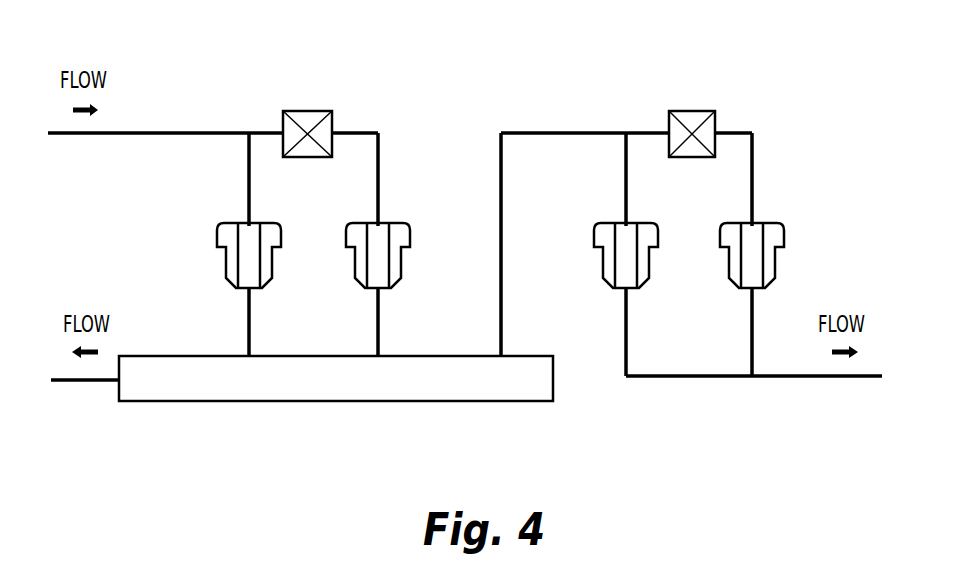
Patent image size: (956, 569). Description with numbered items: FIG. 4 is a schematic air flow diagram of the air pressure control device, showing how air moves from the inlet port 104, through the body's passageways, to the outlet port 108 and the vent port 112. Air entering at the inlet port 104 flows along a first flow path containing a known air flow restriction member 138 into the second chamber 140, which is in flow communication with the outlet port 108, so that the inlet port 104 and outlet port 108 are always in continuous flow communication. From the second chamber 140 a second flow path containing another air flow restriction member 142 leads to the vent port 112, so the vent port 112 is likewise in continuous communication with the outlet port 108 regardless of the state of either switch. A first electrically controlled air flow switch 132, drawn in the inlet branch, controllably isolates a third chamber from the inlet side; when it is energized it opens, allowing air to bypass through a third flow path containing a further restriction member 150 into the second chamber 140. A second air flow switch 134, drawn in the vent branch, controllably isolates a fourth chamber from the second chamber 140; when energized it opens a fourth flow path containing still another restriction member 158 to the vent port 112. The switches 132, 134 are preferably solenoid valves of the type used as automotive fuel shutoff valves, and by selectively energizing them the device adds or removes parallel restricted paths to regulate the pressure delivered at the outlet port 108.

The inlet port 104 is at (48, 133).
The outlet port 108 is at (51, 380).
The vent port 112 is at (882, 376).
The air flow switch 132 is at (316, 111).
The air flow switch 134 is at (697, 111).
The air flow restriction member 138 is at (217, 238).
The air flow restriction member 150 is at (410, 232).
The air flow restriction member 142 is at (603, 255).
The air flow restriction member 158 is at (771, 262).
The second chamber 140 is at (380, 402).